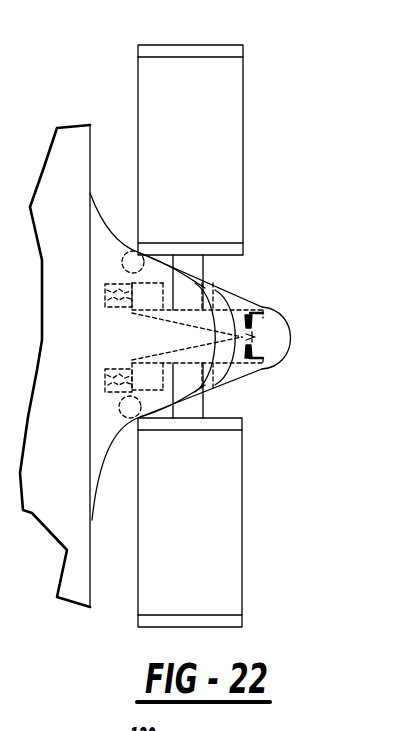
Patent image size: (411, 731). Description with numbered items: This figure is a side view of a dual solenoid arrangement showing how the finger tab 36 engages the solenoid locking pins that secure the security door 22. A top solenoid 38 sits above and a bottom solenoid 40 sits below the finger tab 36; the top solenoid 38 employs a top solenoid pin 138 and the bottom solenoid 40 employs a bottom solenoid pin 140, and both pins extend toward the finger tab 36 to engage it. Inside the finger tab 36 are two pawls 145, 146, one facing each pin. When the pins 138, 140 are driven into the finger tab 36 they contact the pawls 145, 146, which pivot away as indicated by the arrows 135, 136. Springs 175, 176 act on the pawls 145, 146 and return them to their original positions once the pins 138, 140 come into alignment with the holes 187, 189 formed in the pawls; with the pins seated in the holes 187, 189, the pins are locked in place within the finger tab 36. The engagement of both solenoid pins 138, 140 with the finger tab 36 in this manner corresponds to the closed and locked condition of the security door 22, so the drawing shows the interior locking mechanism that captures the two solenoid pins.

The security door 22 is at (90, 147).
The top solenoid 38 is at (243, 128).
The bottom solenoid 40 is at (243, 507).
The bottom solenoid pin 140 is at (205, 402).
The top solenoid pin 138 is at (203, 268).
The pawl 146 is at (245, 297).
The pawl 145 is at (248, 377).
The finger tab 36 is at (290, 324).
The arrow 136 is at (252, 320).
The arrow 135 is at (253, 354).
The spring 176 is at (103, 293).
The spring 175 is at (105, 377).
The hole 189 is at (163, 288).
The hole 187 is at (163, 387).